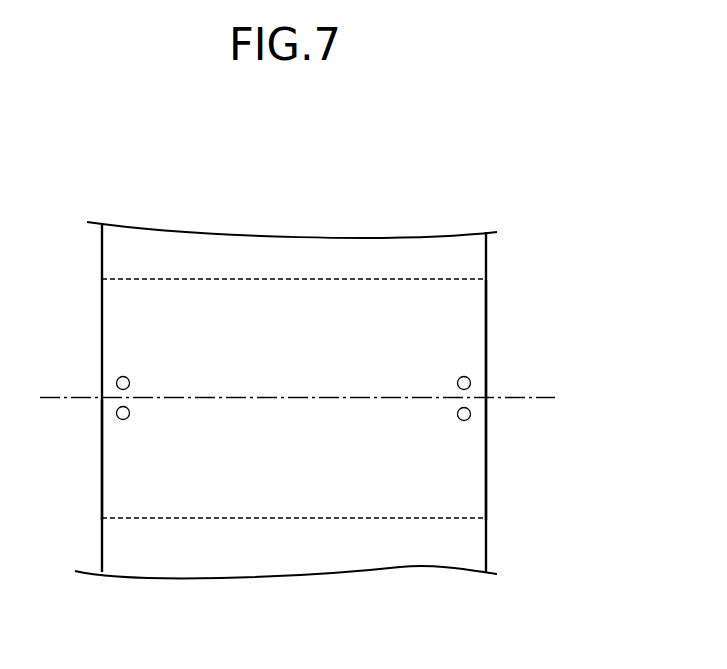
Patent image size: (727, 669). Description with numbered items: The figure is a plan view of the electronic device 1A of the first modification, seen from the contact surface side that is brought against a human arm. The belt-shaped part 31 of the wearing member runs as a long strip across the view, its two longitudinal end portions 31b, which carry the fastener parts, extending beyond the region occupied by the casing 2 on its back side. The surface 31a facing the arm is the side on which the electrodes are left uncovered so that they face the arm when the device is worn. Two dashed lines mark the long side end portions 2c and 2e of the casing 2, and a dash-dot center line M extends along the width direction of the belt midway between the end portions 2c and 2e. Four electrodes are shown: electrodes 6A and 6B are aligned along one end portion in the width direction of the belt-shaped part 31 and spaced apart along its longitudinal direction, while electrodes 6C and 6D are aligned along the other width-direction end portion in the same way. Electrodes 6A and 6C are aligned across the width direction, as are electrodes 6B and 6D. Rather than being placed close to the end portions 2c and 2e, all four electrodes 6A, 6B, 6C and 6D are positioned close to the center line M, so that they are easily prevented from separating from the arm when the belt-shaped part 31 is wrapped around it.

The electronic device 1A is at (421, 160).
The casing 2 is at (185, 520).
The end portion 2c is at (445, 278).
The end portion 2e is at (407, 518).
The belt-shaped part 31 is at (492, 263).
The surface 31a is at (452, 328).
The end portion 31b is at (100, 455).
The electrode 6A is at (471, 379).
The electrode 6B is at (471, 414).
The electrode 6C is at (117, 379).
The electrode 6D is at (117, 409).
The center line M is at (548, 396).